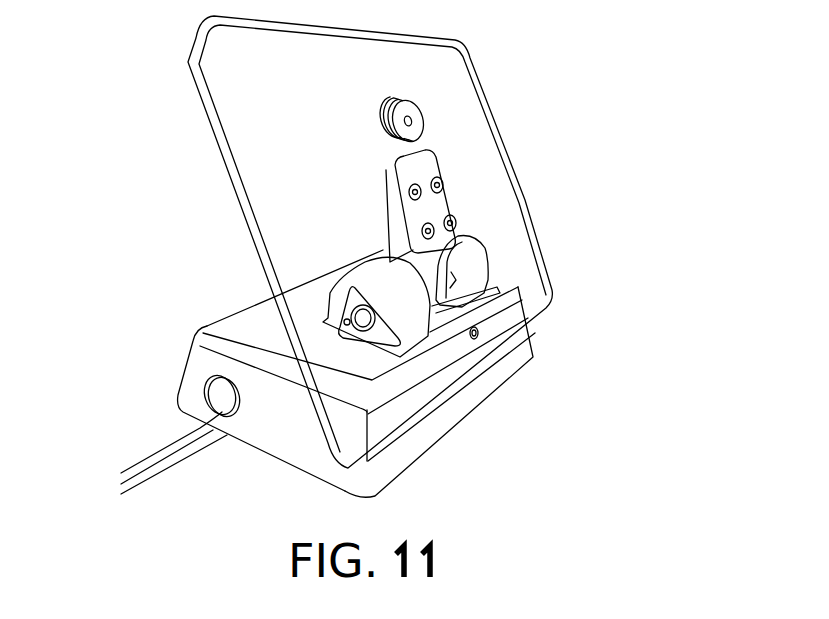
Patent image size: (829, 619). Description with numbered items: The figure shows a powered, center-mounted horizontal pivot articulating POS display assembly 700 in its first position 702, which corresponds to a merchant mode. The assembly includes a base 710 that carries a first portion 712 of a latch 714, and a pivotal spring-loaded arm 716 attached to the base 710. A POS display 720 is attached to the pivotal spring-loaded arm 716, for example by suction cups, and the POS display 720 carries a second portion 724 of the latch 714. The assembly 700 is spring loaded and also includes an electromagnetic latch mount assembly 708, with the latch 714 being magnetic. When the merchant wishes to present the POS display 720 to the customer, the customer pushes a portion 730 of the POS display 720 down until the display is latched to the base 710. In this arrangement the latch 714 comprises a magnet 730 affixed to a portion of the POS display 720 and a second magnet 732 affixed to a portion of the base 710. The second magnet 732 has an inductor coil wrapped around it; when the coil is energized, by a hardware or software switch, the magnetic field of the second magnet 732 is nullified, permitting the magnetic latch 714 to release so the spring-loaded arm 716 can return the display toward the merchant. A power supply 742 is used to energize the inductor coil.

The horizontal pivot POS display assembly 700 is at (595, 84).
The first position 702 is at (587, 202).
The electromagnetic latch mount assembly 708 is at (375, 240).
The base 710 is at (197, 368).
The first portion of latch 712 is at (480, 338).
The latch 714 is at (552, 333).
The pivotal spring-loaded arm 716 is at (395, 207).
The POS display 720 is at (360, 47).
The second portion of latch 724 is at (482, 327).
The magnet 730 is at (410, 100).
The second magnet 732 is at (353, 262).
The power supply 742 is at (150, 467).